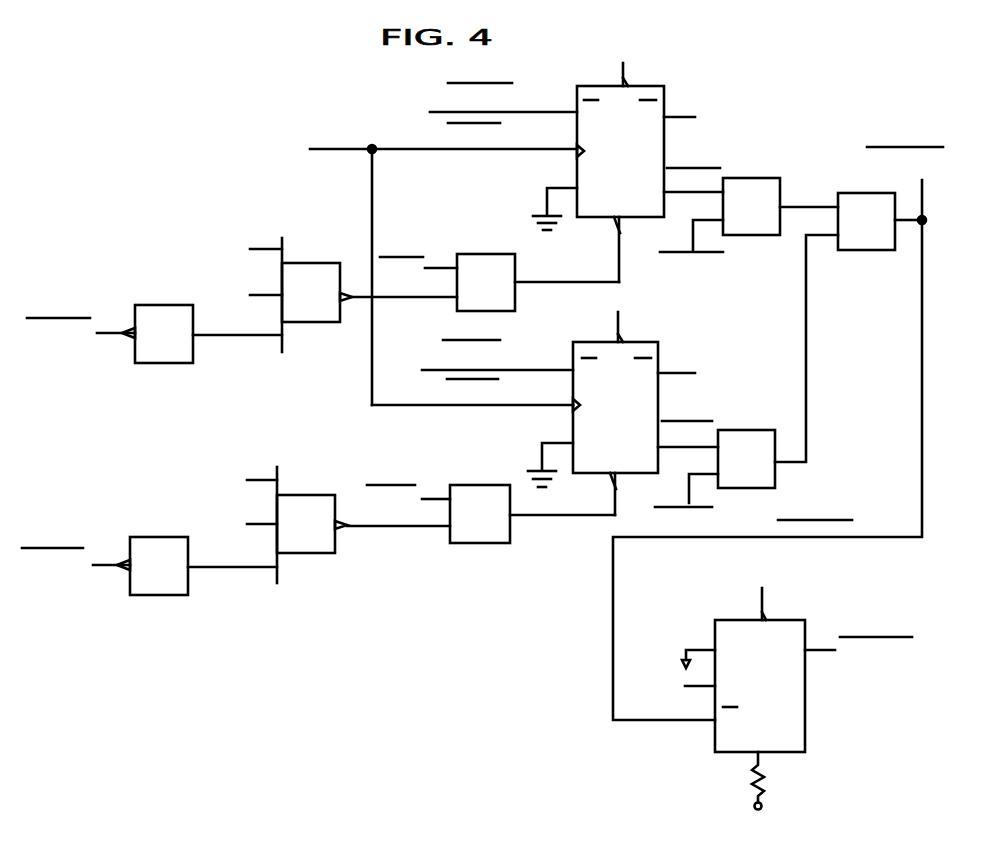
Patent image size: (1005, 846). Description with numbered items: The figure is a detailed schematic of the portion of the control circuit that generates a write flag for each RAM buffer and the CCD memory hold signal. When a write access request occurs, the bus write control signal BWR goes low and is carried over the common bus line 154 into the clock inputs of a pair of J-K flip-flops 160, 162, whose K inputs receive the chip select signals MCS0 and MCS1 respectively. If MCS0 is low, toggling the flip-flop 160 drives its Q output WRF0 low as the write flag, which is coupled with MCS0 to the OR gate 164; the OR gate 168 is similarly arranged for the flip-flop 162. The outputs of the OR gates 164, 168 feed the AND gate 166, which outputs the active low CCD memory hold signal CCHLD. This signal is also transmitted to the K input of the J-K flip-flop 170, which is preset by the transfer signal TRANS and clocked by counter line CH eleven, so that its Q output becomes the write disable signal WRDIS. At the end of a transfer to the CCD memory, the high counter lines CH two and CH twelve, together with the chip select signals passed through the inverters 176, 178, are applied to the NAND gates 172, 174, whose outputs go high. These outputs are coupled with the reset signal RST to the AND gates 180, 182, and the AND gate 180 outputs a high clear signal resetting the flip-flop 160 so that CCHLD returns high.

The common bus line 154 is at (352, 148).
The J-K flip-flop 160 is at (643, 95).
The J-K flip-flop 162 is at (607, 343).
The OR gate 164 is at (760, 183).
The AND gate 166 is at (865, 200).
The OR gate 168 is at (750, 433).
The J-K flip-flop 170 is at (797, 695).
The NAND gate 172 is at (325, 268).
The NAND gate 174 is at (305, 548).
The inverter 176 is at (157, 310).
The inverter 178 is at (162, 540).
The AND gate 180 is at (493, 258).
The AND gate 182 is at (483, 535).